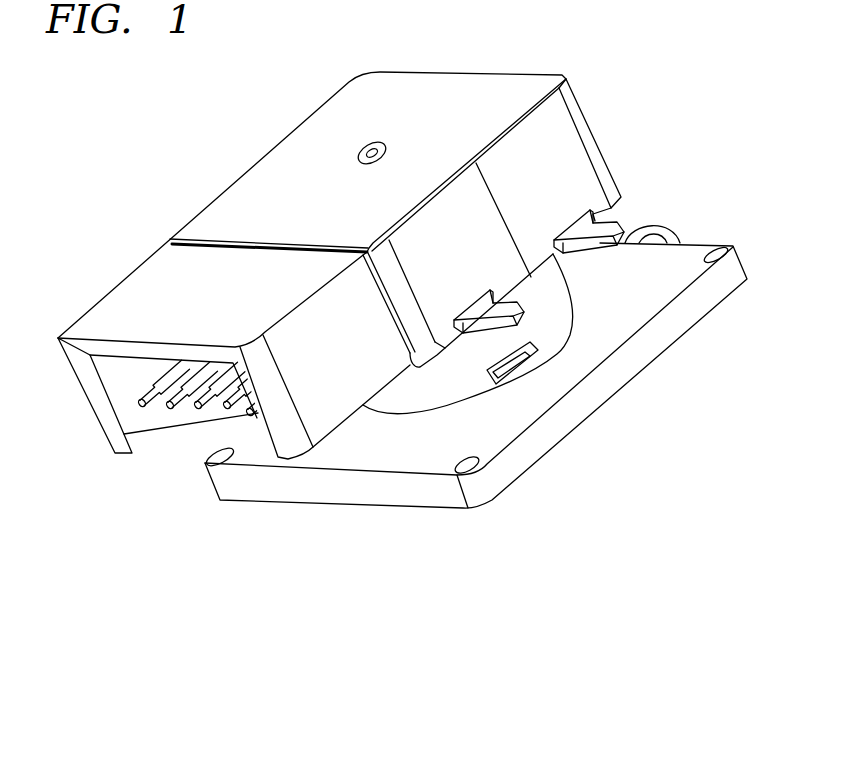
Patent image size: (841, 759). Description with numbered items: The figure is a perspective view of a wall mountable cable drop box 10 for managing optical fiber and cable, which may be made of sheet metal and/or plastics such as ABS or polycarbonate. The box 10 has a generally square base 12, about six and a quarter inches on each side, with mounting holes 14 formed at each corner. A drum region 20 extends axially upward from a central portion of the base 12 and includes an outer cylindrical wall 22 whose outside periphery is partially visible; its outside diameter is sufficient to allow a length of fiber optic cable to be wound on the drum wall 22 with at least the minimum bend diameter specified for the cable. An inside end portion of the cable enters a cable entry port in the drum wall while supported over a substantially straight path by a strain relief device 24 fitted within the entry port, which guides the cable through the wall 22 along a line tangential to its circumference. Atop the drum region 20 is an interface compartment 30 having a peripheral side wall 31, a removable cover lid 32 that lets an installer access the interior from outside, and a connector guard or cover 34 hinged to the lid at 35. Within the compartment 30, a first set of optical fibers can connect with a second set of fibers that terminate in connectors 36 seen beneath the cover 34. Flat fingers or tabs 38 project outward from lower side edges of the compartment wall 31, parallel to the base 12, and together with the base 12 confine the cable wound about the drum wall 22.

The cable drop box 10 is at (205, 157).
The base 12 is at (708, 300).
The mounting holes 14 is at (723, 248).
The drum region 20 is at (410, 398).
The outer cylindrical wall 22 is at (471, 392).
The strain relief device 24 is at (507, 383).
The interface compartment 30 is at (589, 106).
The peripheral side wall 31 is at (580, 155).
The removable cover lid 32 is at (508, 92).
The connector guard or cover 34 is at (102, 312).
The hinge 35 is at (172, 241).
The connectors 36 is at (200, 410).
The flat fingers or tabs 38 is at (523, 315).